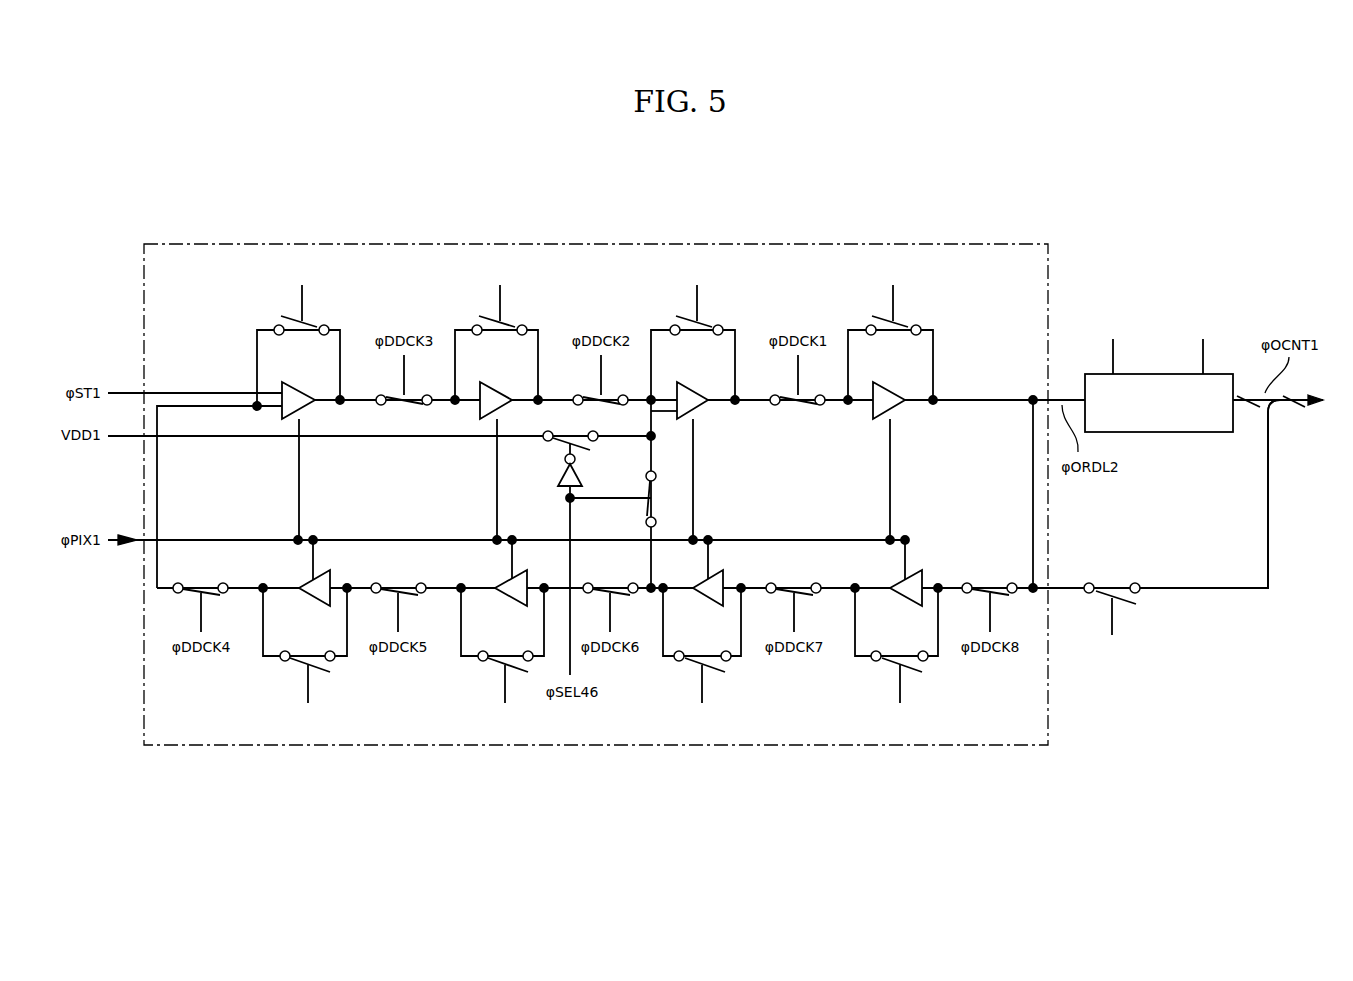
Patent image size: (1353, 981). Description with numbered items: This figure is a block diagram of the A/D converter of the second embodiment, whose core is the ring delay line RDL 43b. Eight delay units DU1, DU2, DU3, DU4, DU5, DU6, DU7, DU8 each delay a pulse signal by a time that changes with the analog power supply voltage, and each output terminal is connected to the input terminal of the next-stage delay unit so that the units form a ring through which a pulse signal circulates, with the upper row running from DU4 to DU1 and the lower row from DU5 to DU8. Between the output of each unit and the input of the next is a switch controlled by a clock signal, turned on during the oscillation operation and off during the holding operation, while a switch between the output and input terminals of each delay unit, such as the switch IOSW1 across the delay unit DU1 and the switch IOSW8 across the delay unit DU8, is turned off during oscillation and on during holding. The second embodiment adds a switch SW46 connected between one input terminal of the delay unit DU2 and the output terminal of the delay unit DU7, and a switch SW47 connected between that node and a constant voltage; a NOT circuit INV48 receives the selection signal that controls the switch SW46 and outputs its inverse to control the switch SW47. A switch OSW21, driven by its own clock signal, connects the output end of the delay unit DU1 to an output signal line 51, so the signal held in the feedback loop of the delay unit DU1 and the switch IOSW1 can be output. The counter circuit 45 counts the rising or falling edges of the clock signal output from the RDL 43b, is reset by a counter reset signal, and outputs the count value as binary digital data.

The RDL 43b is at (1000, 244).
The counter circuit 45 is at (1151, 433).
The output signal line 51 is at (1270, 536).
The delay unit DU1 is at (890, 348).
The delay unit DU2 is at (694, 411).
The delay unit DU3 is at (498, 411).
The delay unit DU4 is at (300, 411).
The delay unit DU5 is at (301, 581).
The delay unit DU6 is at (499, 581).
The delay unit DU7 is at (697, 581).
The delay unit DU8 is at (896, 645).
The switch SW46 is at (648, 495).
The switch SW47 is at (578, 445).
The NOT circuit INV48 is at (558, 483).
The switch IOSW1 is at (894, 331).
The switch IOSW8 is at (889, 660).
The switch OSW21 is at (1105, 590).